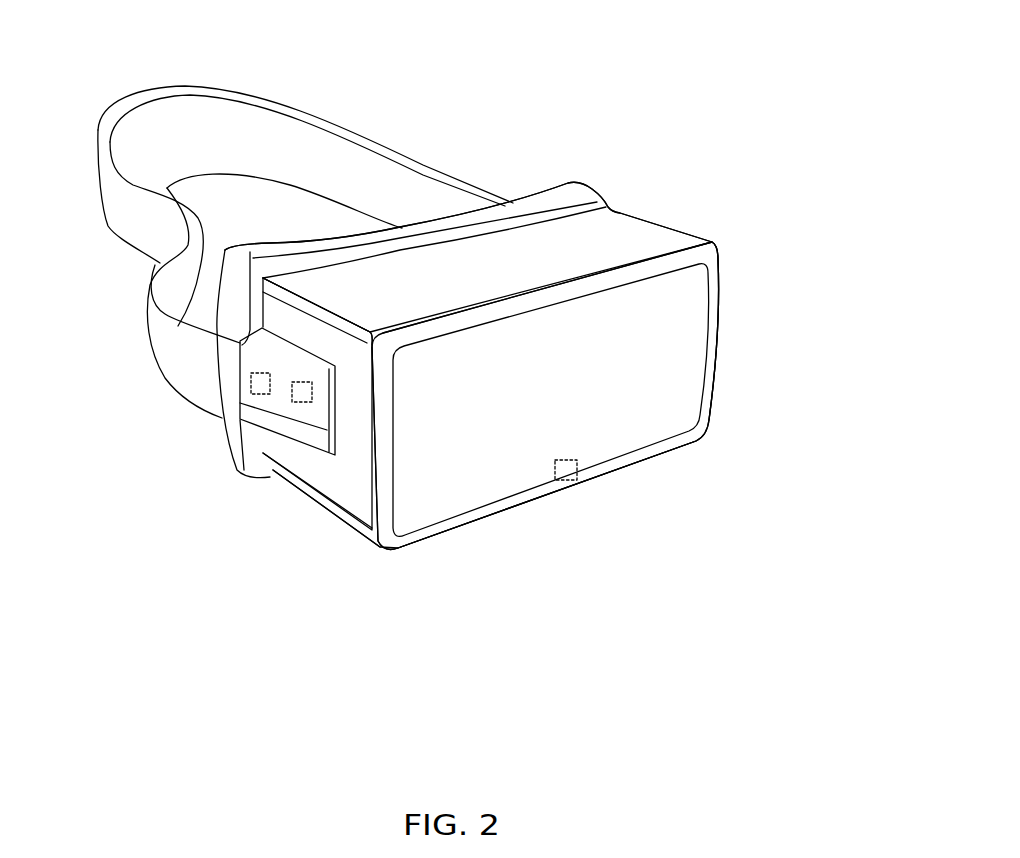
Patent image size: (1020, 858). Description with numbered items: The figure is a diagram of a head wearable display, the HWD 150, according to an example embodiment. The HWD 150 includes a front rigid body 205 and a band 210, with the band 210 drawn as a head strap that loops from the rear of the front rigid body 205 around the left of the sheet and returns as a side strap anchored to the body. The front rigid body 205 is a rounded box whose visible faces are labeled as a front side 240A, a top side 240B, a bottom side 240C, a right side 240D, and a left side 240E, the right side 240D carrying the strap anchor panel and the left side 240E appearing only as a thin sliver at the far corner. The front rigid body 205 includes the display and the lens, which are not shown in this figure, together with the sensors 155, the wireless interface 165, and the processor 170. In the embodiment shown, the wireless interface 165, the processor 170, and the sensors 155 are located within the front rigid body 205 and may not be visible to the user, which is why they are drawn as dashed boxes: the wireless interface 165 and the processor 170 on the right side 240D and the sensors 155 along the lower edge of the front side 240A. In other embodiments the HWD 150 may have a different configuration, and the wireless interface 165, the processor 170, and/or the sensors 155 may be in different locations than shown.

The HWD 150 is at (63, 25).
The band 210 is at (414, 158).
The front rigid body 205 is at (716, 240).
The left side 240E is at (688, 219).
The top side 240B is at (332, 282).
The wireless interface 165 is at (237, 380).
The processor 170 is at (277, 410).
The bottom side 240C is at (294, 522).
The right side 240D is at (344, 486).
The sensors 155 is at (570, 490).
The front side 240A is at (634, 425).